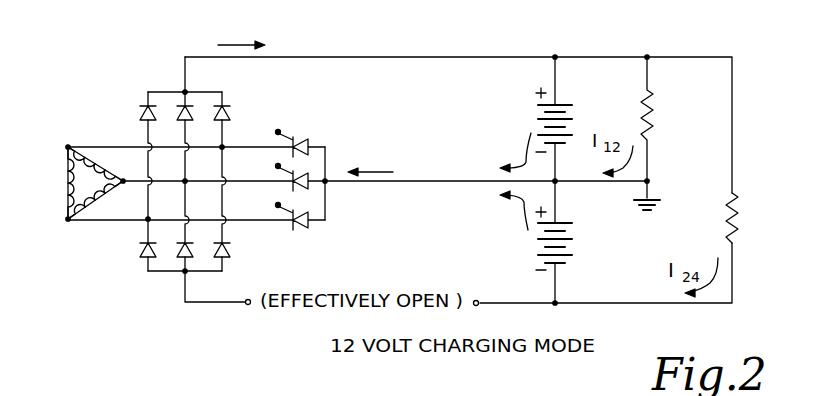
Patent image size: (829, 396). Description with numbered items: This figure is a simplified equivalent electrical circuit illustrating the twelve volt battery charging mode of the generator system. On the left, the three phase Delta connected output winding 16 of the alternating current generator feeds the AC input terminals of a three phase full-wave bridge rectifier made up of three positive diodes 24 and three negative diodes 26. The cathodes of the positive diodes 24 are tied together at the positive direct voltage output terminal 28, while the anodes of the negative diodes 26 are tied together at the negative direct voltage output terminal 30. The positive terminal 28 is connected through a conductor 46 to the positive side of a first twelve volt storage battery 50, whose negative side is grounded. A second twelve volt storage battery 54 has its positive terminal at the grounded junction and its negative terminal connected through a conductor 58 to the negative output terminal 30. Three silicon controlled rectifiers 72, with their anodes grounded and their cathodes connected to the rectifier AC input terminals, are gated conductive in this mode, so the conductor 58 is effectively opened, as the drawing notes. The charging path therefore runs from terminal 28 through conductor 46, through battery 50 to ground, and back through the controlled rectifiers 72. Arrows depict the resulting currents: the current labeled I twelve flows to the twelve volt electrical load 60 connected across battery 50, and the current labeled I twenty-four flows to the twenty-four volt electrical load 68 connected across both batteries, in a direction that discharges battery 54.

The three phase Delta connected output winding 16 is at (85, 192).
The positive diodes 24 is at (196, 122).
The negative diodes 26 is at (197, 260).
The positive direct voltage output terminal 28 is at (185, 92).
The negative direct voltage output terminal 30 is at (185, 272).
The conductor 46 is at (407, 57).
The 12 volt storage battery 50 is at (570, 120).
The 12 volt storage battery 54 is at (572, 238).
The conductor 58 is at (521, 303).
The 12 volt motor vehicle electrical load 60 is at (655, 125).
The 24 volt electrical load 68 is at (740, 209).
The silicon controlled rectifiers 72 is at (306, 226).